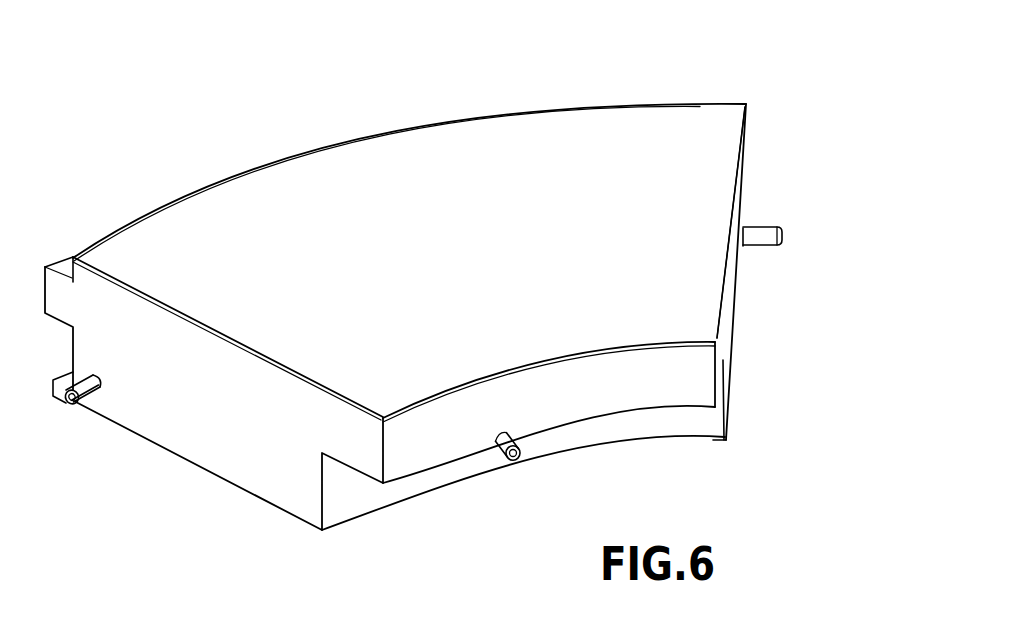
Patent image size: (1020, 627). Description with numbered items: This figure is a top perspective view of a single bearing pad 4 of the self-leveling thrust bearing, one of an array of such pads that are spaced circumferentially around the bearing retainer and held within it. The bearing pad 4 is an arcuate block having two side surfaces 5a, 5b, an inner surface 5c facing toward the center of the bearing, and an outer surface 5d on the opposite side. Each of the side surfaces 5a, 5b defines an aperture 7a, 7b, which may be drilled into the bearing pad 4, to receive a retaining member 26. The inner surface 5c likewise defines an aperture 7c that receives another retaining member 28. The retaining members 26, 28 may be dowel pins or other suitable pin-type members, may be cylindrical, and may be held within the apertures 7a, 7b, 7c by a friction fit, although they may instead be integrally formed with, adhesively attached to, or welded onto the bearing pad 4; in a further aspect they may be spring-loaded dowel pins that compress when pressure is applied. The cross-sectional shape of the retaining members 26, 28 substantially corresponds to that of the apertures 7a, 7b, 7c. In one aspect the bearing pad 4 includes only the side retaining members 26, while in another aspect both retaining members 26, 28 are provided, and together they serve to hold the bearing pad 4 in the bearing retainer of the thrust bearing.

The bearing pad 4 is at (200, 103).
The side surface 5a is at (728, 328).
The side surface 5b is at (167, 430).
The inner surface 5c is at (653, 388).
The outer surface 5d is at (585, 105).
The aperture 7a is at (750, 242).
The aperture 7b is at (102, 380).
The aperture 7c is at (500, 437).
The retaining member 26 is at (766, 230).
The retaining member 28 is at (517, 459).